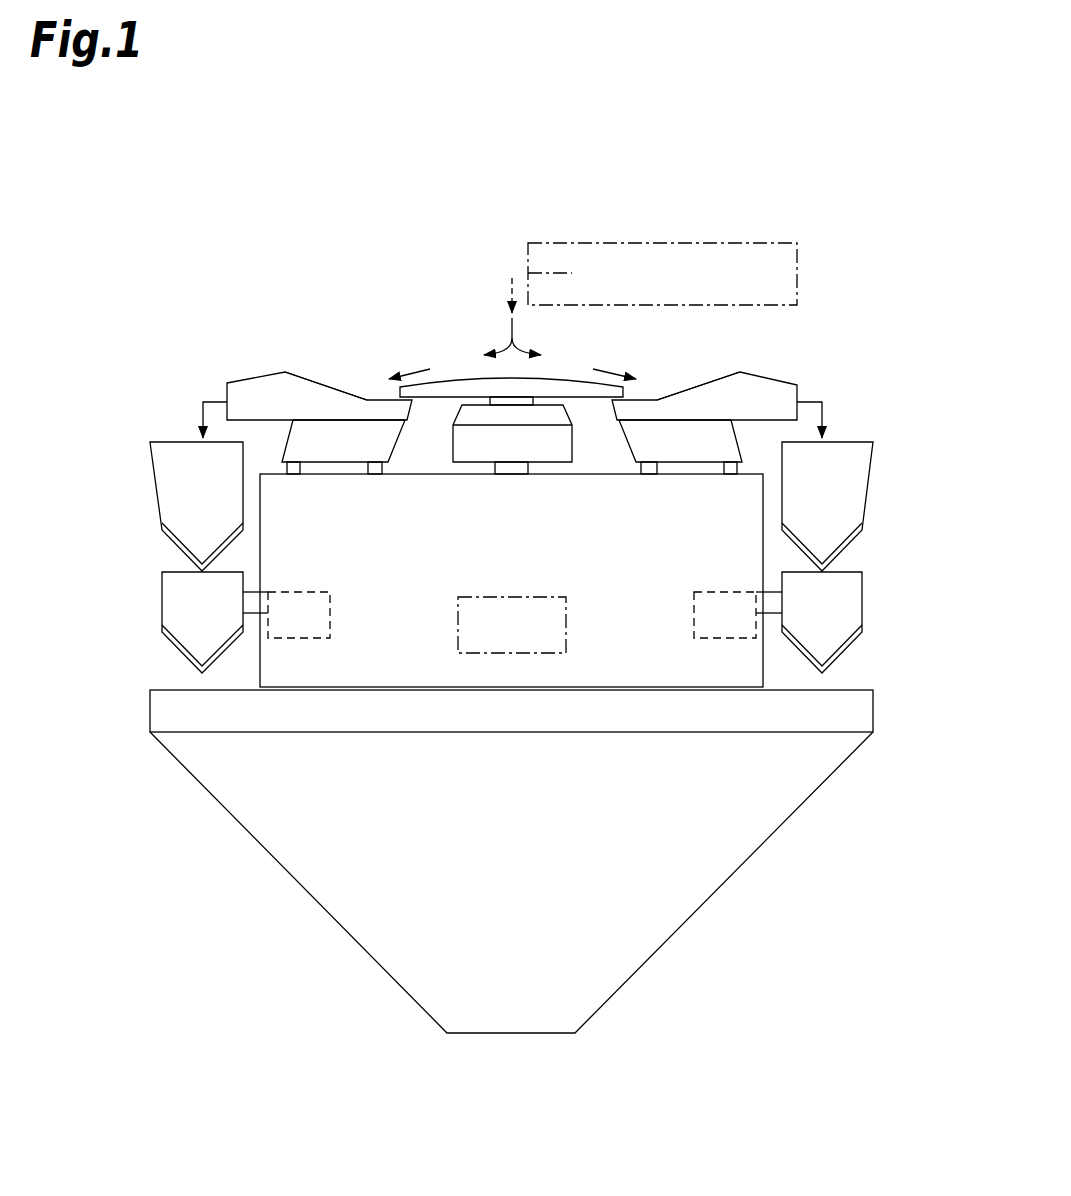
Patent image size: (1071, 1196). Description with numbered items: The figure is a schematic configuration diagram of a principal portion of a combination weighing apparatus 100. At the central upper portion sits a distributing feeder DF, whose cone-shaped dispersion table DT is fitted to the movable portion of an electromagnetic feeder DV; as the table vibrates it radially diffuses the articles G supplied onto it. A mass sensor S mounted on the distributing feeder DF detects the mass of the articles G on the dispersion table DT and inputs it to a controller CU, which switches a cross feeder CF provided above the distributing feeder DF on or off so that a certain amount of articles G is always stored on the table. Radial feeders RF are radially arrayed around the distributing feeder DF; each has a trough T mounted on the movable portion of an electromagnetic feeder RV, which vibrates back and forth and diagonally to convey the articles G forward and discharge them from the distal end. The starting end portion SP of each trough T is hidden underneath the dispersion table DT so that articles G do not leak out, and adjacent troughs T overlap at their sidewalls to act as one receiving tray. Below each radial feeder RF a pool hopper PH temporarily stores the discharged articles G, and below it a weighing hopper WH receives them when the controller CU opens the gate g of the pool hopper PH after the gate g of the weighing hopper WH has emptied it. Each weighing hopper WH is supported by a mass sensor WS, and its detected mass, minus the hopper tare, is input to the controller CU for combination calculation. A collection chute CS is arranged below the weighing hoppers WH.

The combination weighing apparatus 100 is at (290, 235).
The cross feeder CF is at (741, 243).
The articles G is at (524, 273).
The distributing feeder DF is at (469, 375).
The dispersion table DT is at (557, 384).
The starting end portion SP is at (404, 413).
The electromagnetic feeder DV is at (469, 452).
The mass sensor S is at (520, 467).
The electromagnetic feeder RV is at (333, 448).
The radial feeder RF is at (250, 373).
The trough T is at (305, 392).
The pool hopper PH is at (170, 487).
The gate g is at (170, 553).
The weighing hopper WH is at (168, 600).
The mass sensor WS is at (330, 600).
The controller CU is at (566, 640).
The collection chute CS is at (732, 850).